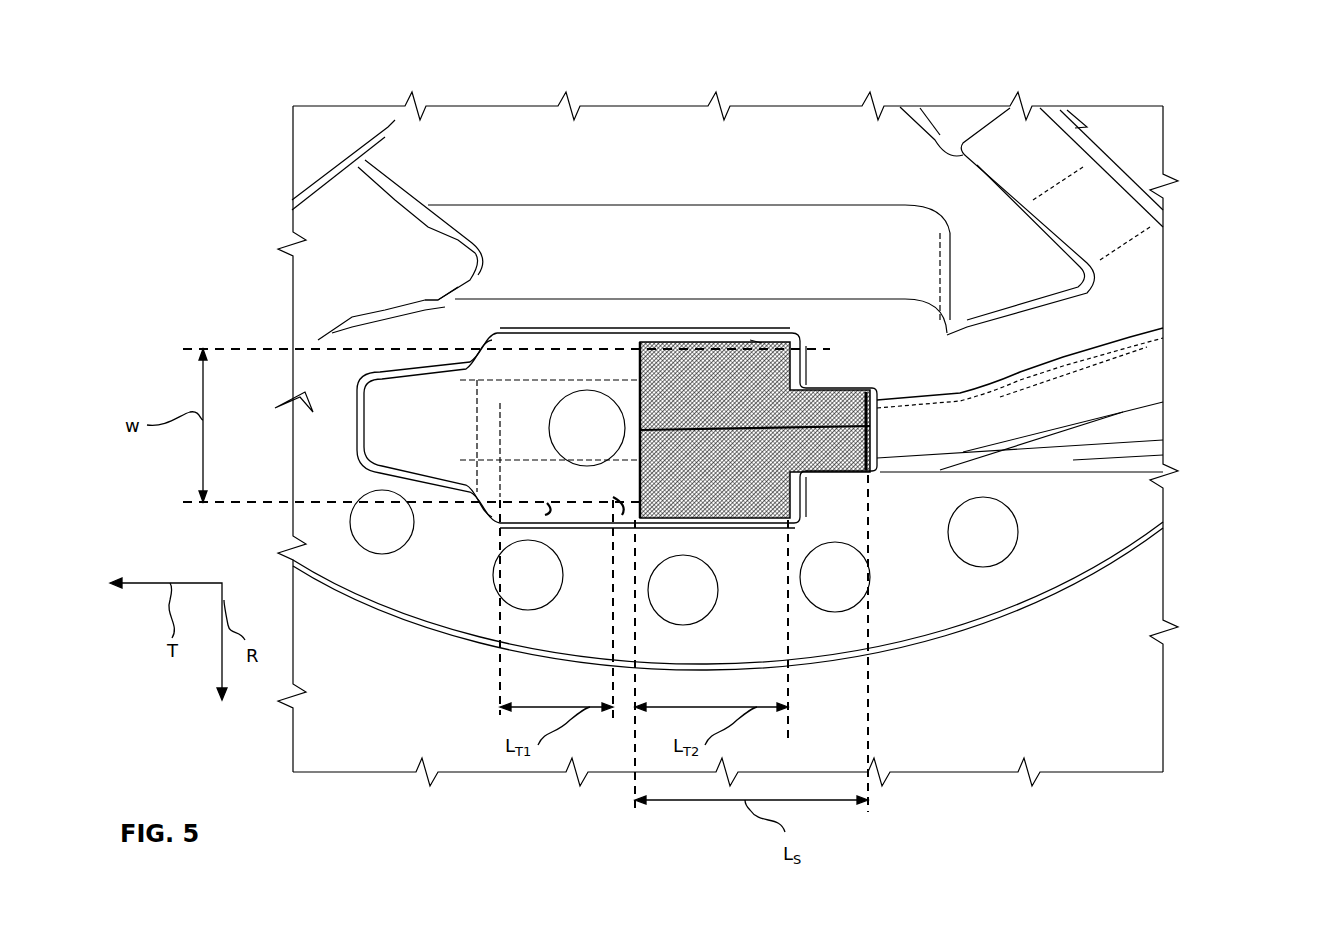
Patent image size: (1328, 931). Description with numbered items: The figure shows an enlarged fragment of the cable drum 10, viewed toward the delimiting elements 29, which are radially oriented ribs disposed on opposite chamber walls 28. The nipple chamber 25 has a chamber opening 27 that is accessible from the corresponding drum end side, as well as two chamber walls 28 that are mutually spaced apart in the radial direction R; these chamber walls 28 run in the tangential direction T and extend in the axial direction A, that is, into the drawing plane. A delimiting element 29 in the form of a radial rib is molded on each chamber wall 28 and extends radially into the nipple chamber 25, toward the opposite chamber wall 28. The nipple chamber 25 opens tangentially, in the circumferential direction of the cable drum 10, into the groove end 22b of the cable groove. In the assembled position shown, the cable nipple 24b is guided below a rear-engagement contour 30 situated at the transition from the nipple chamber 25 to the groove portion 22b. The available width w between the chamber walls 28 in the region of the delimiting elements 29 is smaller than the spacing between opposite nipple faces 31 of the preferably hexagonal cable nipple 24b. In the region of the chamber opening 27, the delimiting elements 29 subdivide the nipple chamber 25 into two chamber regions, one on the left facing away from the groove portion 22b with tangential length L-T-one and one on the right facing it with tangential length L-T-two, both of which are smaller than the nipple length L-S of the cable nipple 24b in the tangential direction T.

The cable drum 10 is at (1112, 210).
The groove end 22b is at (1060, 397).
The cable nipple 24b is at (690, 360).
The nipple chamber 25 is at (538, 271).
The chamber opening 27 is at (510, 380).
The chamber wall 28 is at (550, 337).
The delimiting element 29 is at (623, 337).
The rear-engagement contour 30 is at (845, 355).
The nipple face 31 is at (762, 343).